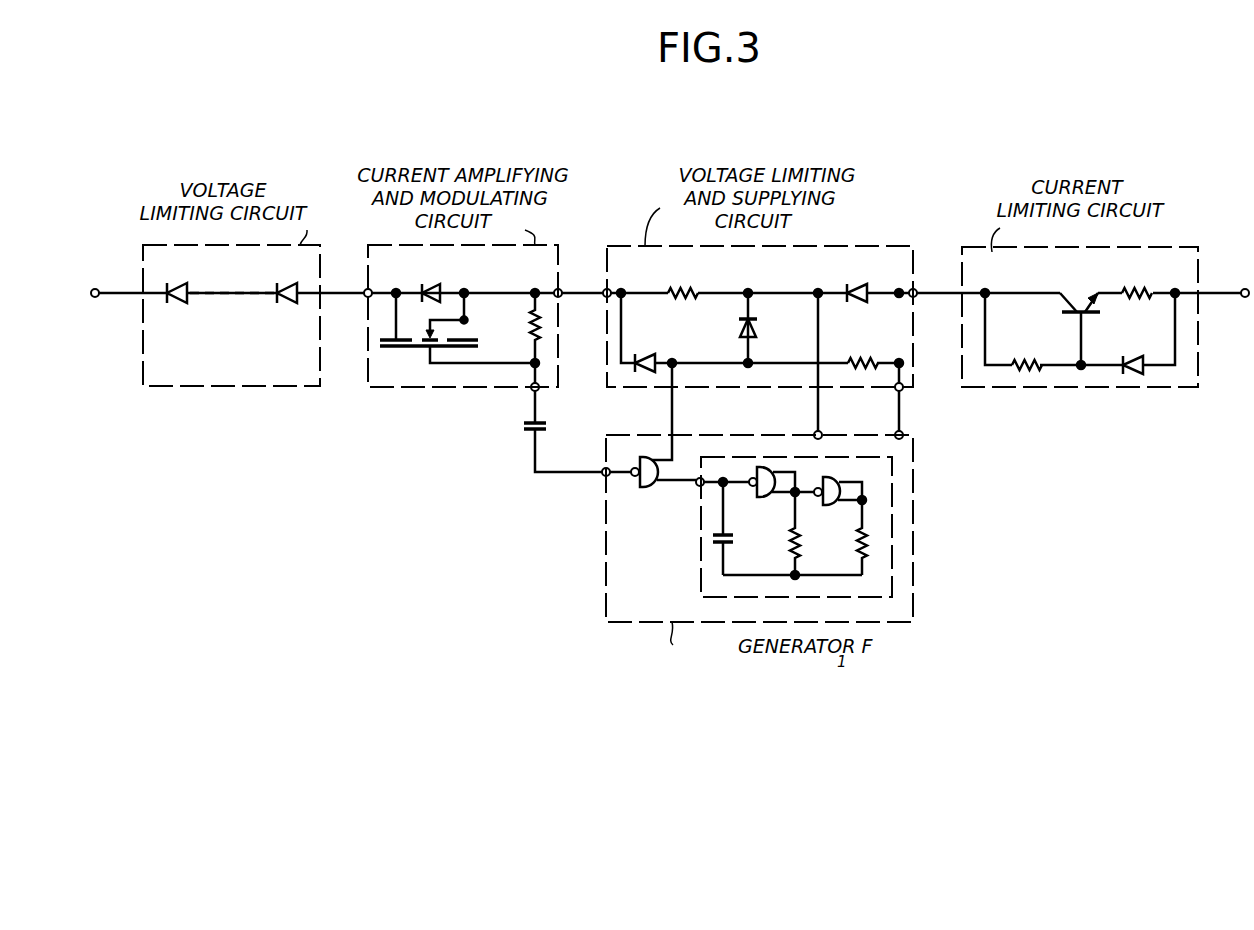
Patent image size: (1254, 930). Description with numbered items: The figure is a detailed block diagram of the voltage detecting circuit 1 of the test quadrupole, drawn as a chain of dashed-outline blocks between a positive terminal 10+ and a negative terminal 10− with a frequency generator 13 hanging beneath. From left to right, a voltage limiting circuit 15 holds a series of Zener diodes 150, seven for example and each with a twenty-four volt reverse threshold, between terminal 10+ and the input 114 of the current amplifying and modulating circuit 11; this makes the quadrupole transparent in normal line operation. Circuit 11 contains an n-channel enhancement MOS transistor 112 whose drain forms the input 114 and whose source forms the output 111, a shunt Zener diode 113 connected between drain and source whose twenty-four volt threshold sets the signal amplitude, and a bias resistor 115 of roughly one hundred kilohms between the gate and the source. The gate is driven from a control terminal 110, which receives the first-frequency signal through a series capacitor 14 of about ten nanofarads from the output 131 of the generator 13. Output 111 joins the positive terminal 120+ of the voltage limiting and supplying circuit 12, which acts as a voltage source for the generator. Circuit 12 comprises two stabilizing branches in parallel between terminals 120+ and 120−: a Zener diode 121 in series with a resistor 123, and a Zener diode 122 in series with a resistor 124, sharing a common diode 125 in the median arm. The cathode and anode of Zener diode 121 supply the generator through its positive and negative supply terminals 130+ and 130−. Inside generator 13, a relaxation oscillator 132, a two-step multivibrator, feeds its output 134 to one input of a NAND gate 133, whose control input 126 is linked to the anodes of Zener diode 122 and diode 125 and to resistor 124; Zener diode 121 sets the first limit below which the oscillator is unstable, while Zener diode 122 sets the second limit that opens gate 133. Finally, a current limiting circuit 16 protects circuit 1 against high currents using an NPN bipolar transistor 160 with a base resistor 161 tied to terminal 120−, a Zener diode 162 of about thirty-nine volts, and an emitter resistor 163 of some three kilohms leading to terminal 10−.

The voltage detecting circuit 1 is at (1043, 513).
The terminals 10 is at (669, 296).
The current amplifying and modulating circuit 11 is at (405, 387).
The voltage limiting and supplying circuit 12 is at (612, 387).
The generator 13 is at (913, 523).
The series capacitor 14 is at (529, 432).
The voltage limiting circuit 15 is at (237, 386).
The current limiting circuit 16 is at (1090, 387).
The control terminal 110 is at (531, 391).
The output terminal 111 is at (558, 289).
The transistor 112 is at (408, 350).
The shunt Zener diode 113 is at (434, 284).
The input 114 is at (366, 295).
The bias resistor 115 is at (531, 325).
The terminals 120 is at (608, 297).
The Zener diode 121 is at (860, 276).
The Zener diode 122 is at (641, 356).
The resistor 123 is at (684, 289).
The resistor 124 is at (859, 357).
The common diode 125 is at (756, 328).
The control input 126 is at (675, 362).
The supply terminals 130 is at (895, 433).
The output 131 is at (604, 478).
The relaxation oscillator 132 is at (701, 590).
The NAND gate 133 is at (646, 488).
The output 134 is at (699, 489).
The Zener diodes 150 is at (278, 300).
The NPN bipolar transistor 160 is at (1078, 304).
The base resistor 161 is at (1026, 360).
The Zener diode 162 is at (1133, 358).
The emitter resistor 163 is at (1150, 281).